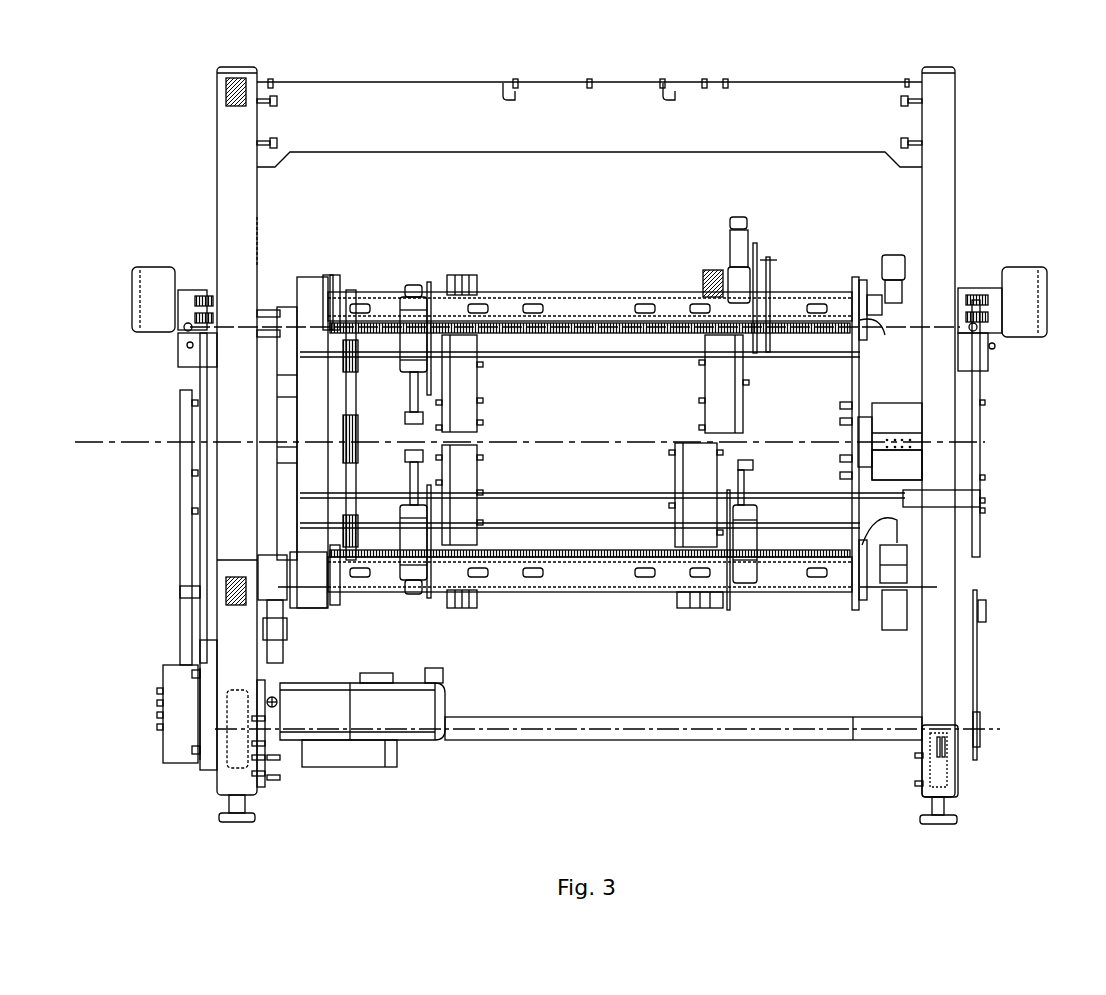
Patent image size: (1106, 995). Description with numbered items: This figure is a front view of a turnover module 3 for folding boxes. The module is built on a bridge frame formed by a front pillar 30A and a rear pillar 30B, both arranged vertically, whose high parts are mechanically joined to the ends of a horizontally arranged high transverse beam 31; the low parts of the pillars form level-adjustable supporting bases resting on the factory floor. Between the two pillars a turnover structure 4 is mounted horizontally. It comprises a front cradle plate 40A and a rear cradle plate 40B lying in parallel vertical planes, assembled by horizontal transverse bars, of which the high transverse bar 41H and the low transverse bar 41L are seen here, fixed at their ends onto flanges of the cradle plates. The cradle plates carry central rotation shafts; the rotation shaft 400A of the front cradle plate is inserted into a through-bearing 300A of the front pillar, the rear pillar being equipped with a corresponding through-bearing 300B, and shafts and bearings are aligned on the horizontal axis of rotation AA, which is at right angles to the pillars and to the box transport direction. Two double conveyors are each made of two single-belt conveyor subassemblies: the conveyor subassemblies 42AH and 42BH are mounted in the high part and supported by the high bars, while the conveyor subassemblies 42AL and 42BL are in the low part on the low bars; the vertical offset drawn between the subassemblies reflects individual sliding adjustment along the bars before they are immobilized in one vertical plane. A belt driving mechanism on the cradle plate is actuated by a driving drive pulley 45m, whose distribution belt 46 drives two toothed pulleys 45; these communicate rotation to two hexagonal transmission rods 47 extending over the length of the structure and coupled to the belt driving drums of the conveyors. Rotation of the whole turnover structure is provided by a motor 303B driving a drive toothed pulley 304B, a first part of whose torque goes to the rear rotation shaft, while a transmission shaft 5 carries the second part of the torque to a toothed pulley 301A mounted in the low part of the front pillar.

The turnover module 3 is at (1000, 149).
The turnover structure 4 is at (663, 253).
The transmission shaft 5 is at (630, 727).
The front pillar 30A is at (943, 210).
The rear pillar 30B is at (238, 204).
The high transverse beam 31 is at (333, 98).
The front cradle plate 40A is at (865, 383).
The rear cradle plate 40B is at (323, 342).
The high transverse bar 41H is at (803, 300).
The low transverse bar 41L is at (790, 570).
The conveyor subassembly 42AH is at (720, 388).
The conveyor subassembly 42AL is at (692, 470).
The conveyor subassembly 42BH is at (463, 395).
The conveyor subassembly 42BL is at (463, 472).
The driving toothed pulley 45 is at (360, 345).
The driving drive pulley 45m is at (383, 408).
The distribution belt 46 is at (355, 482).
The transmission rod 47 is at (590, 353).
The through-bearing 300A is at (907, 460).
The drive unit 300B is at (337, 750).
The toothed pulley 301A is at (977, 760).
The motor 303B is at (398, 713).
The drive toothed pulley 304B is at (170, 767).
The rotation shaft 400A is at (865, 423).
The axis of rotation AA is at (97, 443).